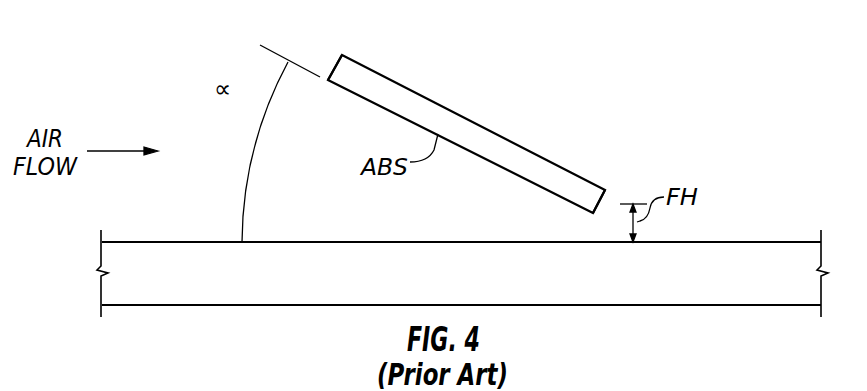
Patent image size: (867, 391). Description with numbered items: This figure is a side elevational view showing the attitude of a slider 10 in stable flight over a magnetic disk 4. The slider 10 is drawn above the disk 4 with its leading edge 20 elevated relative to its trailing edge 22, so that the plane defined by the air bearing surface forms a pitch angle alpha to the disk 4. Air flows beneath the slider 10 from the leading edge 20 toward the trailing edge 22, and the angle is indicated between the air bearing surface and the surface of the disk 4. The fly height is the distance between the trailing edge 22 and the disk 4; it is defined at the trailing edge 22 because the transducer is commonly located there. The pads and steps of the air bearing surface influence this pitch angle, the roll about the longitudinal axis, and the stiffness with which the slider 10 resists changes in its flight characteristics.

The disk 4 is at (328, 297).
The slider 10 is at (498, 108).
The leading edge 20 is at (328, 70).
The trailing edge 22 is at (606, 194).